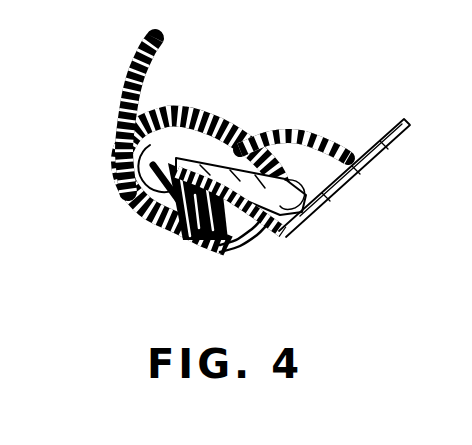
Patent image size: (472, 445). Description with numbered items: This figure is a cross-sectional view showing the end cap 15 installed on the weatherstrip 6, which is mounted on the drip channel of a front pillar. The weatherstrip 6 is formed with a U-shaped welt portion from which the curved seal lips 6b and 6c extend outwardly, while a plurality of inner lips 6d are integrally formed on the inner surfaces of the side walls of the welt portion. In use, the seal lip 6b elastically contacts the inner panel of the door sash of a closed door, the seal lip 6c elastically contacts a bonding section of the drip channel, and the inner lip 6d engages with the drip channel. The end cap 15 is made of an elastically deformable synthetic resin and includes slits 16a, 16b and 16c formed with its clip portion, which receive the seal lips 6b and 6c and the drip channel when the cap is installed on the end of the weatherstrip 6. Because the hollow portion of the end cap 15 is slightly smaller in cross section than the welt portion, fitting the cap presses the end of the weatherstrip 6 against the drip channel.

The weatherstrip 6 is at (193, 120).
The seal lip 6b is at (140, 52).
The seal lip 6c is at (343, 152).
The inner lip 6d is at (158, 218).
The end cap 15 is at (227, 137).
The slit 16a is at (137, 108).
The slit 16b is at (267, 140).
The slit 16c is at (268, 236).